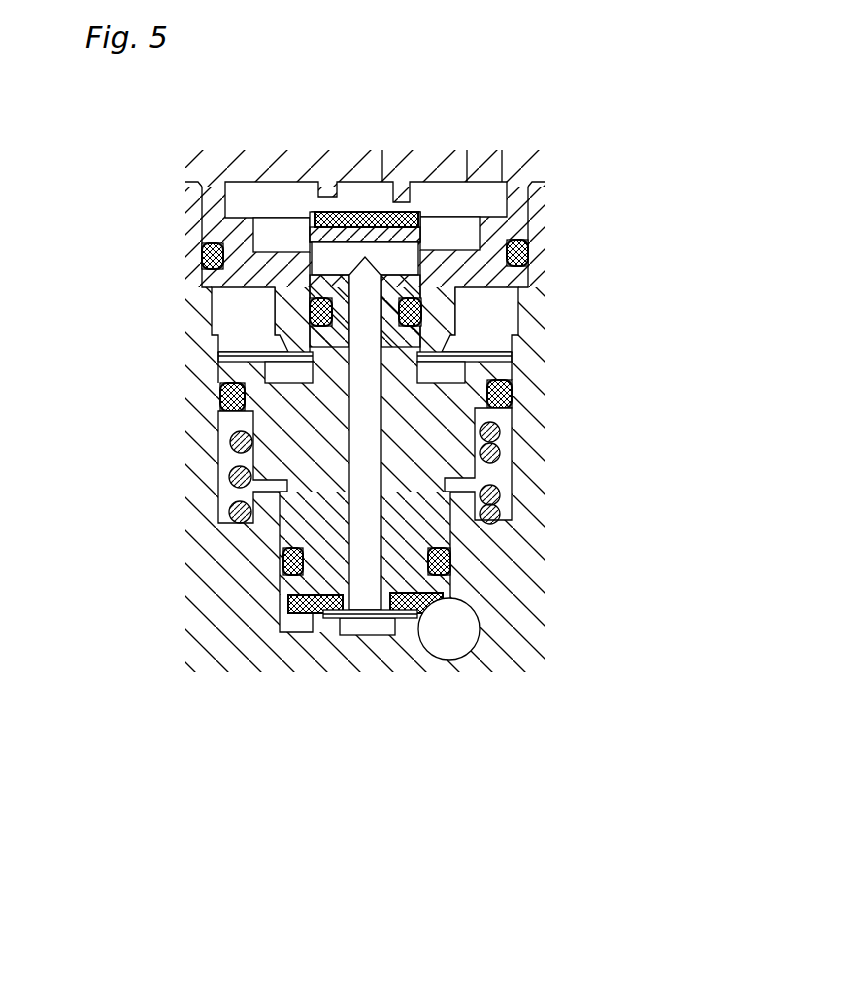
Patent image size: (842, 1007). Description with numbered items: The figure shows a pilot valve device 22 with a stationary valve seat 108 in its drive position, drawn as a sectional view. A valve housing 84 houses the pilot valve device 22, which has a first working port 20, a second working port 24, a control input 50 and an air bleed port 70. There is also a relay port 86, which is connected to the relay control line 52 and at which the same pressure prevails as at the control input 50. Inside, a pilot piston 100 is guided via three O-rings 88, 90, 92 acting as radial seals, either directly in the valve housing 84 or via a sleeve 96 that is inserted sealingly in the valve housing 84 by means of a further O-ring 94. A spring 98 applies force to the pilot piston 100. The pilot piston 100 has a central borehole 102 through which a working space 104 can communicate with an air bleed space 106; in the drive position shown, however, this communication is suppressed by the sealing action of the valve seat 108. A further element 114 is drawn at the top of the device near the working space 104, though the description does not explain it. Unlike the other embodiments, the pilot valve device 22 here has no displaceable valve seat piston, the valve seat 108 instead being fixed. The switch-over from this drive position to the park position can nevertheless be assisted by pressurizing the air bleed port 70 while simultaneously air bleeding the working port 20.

The first working port 20 is at (372, 157).
The pilot valve device 22 is at (403, 732).
The second working port 24 is at (490, 157).
The control input 50 is at (540, 307).
The relay control line 52 is at (185, 323).
The air bleed port 70 is at (472, 628).
The valve housing 84 is at (520, 657).
The relay port 86 is at (193, 308).
The O-ring 88 is at (450, 565).
The O-ring 90 is at (513, 396).
The O-ring 92 is at (422, 312).
The O-ring 94 is at (527, 243).
The sleeve 96 is at (200, 232).
The spring 98 is at (488, 453).
The pilot piston 100 is at (300, 542).
The central borehole 102 is at (365, 484).
The working space 104 is at (280, 193).
The air bleed space 106 is at (290, 620).
The stationary valve seat 108 is at (313, 617).
The sealing nut 114 is at (336, 210).